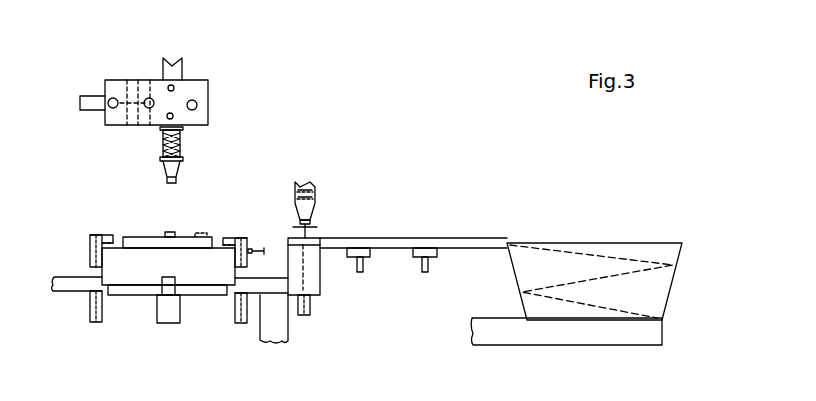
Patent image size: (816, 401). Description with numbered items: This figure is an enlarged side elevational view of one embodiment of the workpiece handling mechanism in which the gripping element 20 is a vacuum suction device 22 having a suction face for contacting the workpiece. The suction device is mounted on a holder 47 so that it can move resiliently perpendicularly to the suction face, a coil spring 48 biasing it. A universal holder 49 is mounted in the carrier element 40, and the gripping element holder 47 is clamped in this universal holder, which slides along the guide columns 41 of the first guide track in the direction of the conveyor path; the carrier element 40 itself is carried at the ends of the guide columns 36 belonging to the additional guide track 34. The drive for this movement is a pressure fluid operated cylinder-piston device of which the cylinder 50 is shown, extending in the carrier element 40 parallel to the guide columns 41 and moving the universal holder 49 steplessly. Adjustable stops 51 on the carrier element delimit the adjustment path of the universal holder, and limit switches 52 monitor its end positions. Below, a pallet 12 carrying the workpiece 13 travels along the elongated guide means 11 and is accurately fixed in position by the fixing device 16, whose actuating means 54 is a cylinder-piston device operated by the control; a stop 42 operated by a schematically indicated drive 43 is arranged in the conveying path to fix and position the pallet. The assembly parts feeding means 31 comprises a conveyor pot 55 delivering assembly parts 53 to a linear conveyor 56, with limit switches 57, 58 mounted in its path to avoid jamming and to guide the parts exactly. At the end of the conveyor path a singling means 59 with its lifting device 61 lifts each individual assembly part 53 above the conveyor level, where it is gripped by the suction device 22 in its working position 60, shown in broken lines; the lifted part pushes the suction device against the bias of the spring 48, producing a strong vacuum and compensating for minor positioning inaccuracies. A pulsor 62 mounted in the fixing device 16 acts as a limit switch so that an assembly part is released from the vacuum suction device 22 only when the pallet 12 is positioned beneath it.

The elongated guide means 11 is at (110, 290).
The pallet 12 is at (207, 272).
The workpiece 13 is at (140, 242).
The fixing device 16 is at (93, 252).
The gripping element 20 is at (137, 70).
The vacuum suction device 22 is at (177, 181).
The assembly parts feeding means 31 is at (578, 221).
The additional guide track 34 is at (80, 82).
The guide columns 36 is at (88, 112).
The carrier element 40 is at (115, 82).
The guide columns 41 is at (149, 108).
The stop 42 is at (184, 340).
The drive 43 is at (153, 331).
The holder 47 is at (173, 73).
The coil spring 48 is at (181, 139).
The universal holder 49 is at (140, 80).
The cylinder 50 is at (113, 108).
The adjustable stops 51 is at (168, 119).
The limit switches 52 is at (174, 88).
The assembly part 53 is at (175, 231).
The actuating means 54 is at (97, 321).
The conveyor pot 55 is at (635, 248).
The linear conveyor 56 is at (477, 247).
The limit switch 57 is at (361, 265).
The limit switch 58 is at (428, 268).
The singling means 59 is at (313, 275).
The working position 60 is at (283, 202).
The lifting device 61 is at (307, 314).
The pulsor 62 is at (257, 248).